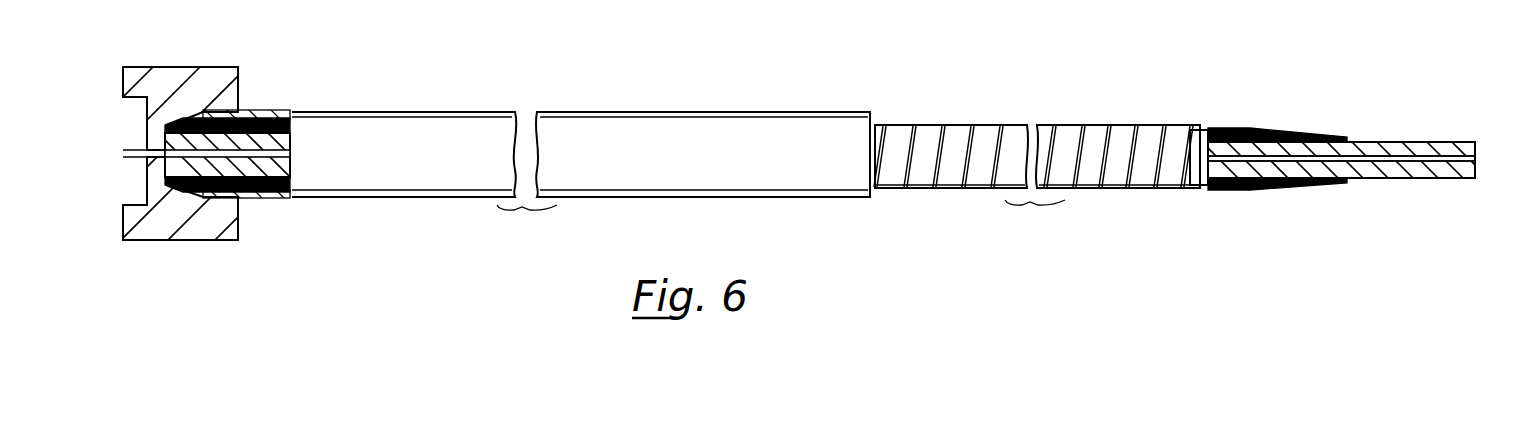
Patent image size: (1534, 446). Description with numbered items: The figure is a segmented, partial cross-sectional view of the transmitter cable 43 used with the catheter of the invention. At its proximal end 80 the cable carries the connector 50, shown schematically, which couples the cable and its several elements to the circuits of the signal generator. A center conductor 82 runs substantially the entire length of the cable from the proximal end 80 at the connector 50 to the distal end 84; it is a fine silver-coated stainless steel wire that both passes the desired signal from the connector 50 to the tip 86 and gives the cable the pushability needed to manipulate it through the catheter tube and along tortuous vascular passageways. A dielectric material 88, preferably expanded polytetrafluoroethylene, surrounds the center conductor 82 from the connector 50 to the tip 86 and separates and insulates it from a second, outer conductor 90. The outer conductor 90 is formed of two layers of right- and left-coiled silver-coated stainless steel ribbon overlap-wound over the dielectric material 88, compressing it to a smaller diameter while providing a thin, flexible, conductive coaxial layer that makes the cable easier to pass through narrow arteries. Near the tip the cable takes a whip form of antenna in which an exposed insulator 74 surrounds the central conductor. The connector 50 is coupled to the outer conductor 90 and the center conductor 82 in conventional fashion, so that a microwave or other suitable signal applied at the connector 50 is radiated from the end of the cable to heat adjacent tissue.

The transmitter cable 43 is at (855, 109).
The connector 50 is at (190, 67).
The exposed insulator 74 is at (1057, 2).
The proximal end 80 is at (291, 66).
The center conductor 82 is at (275, 112).
The distal end 84 is at (1437, 130).
The tip 86 is at (1472, 183).
The dielectric material 88 is at (1388, 166).
The outer conductor 90 is at (1298, 128).